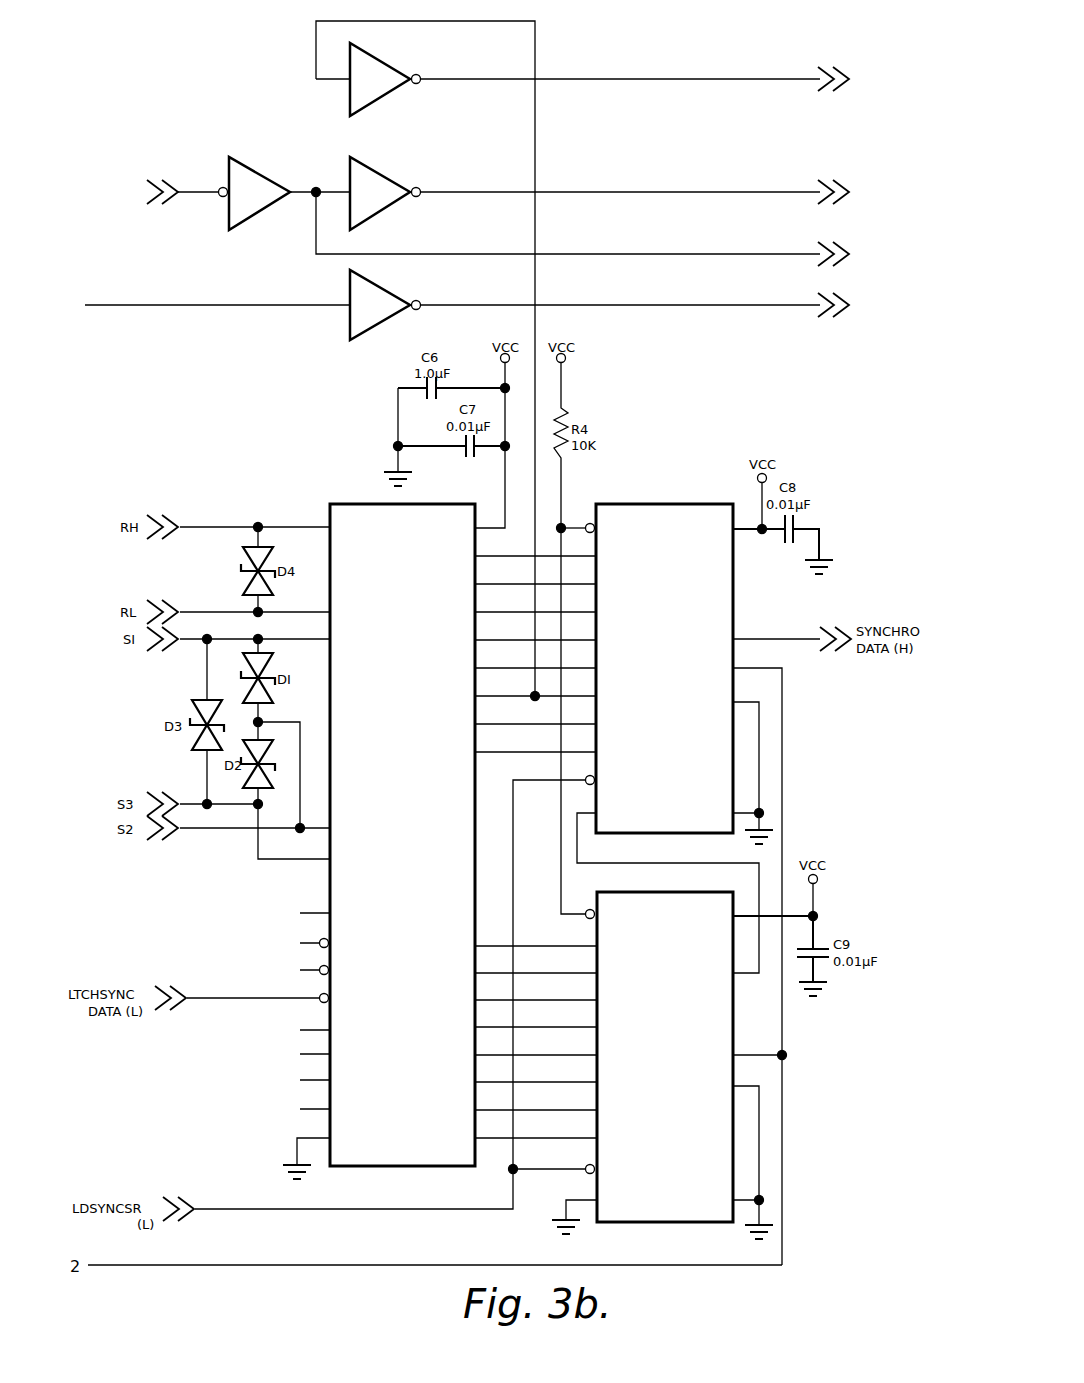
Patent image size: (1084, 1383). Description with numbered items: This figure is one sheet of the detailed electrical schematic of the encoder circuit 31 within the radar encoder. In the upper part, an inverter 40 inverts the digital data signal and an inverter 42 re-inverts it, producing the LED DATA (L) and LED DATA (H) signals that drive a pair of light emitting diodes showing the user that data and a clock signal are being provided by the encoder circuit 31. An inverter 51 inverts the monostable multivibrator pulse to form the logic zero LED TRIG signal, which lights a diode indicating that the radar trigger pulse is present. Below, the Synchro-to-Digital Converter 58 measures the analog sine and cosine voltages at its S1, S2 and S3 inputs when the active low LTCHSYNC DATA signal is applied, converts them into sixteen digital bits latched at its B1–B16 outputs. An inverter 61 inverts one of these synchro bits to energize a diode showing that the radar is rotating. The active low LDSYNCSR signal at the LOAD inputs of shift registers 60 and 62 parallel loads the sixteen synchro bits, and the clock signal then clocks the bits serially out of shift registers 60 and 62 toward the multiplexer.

The encoder circuit 31 is at (242, 96).
The inverter 40 is at (252, 176).
The inverter 42 is at (383, 176).
The inverter 51 is at (383, 300).
The synchro-to-digital converter 58 is at (360, 503).
The shift register 60 is at (640, 503).
The inverter 61 is at (384, 66).
The shift register 62 is at (682, 1224).